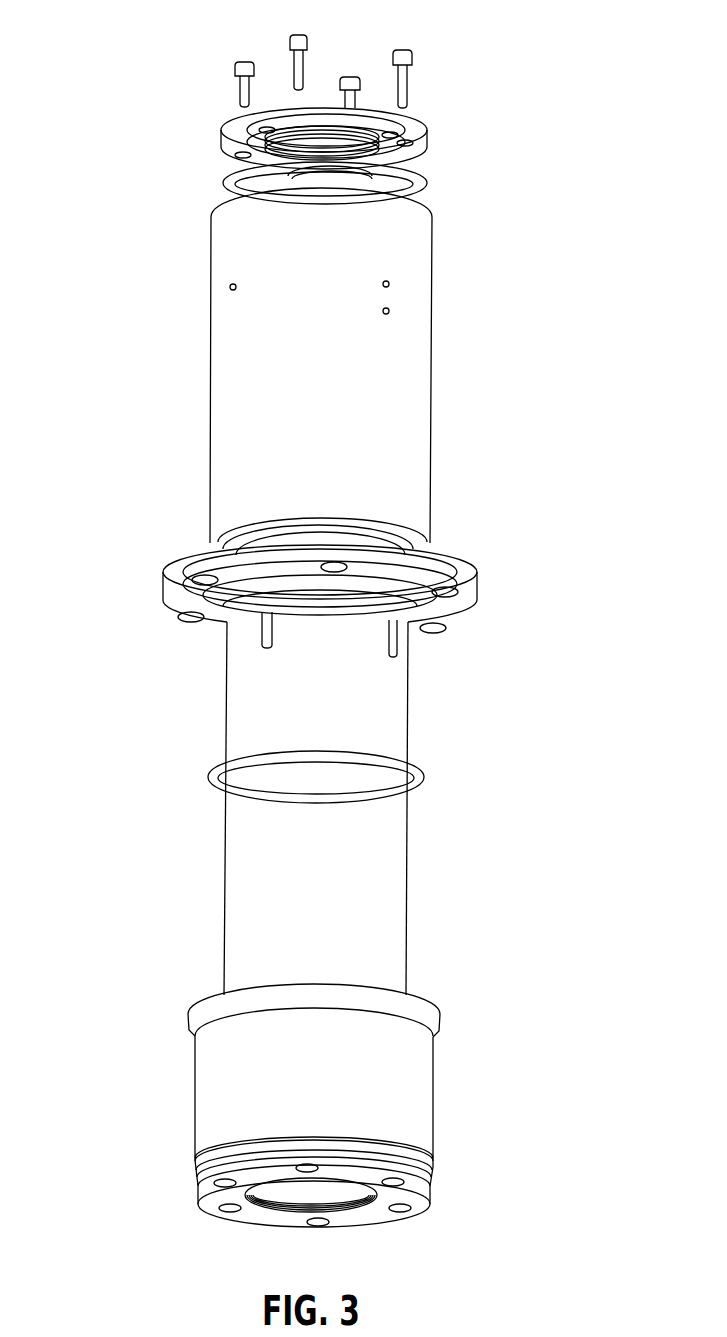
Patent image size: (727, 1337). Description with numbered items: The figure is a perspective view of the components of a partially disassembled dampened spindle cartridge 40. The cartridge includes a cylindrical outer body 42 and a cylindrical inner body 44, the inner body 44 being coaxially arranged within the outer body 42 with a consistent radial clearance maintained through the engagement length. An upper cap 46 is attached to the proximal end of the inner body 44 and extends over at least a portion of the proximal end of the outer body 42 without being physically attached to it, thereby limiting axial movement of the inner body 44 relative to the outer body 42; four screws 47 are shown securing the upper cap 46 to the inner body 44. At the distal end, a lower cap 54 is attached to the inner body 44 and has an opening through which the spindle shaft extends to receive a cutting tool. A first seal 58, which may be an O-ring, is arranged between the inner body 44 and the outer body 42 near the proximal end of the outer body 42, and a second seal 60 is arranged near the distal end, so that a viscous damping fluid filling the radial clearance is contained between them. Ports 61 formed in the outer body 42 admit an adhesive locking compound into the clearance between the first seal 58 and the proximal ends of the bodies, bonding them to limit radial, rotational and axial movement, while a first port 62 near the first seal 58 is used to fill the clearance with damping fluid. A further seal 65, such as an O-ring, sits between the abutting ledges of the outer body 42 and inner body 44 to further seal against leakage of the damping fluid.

The dampened spindle cartridge 40 is at (500, 21).
The outer body 42 is at (316, 371).
The inner body 44 is at (228, 1098).
The upper cap 46 is at (235, 143).
The screws 47 is at (292, 48).
The lower cap 54 is at (405, 1195).
The first seal 58 is at (407, 173).
The second seal 60 is at (230, 613).
The ports 61 is at (230, 286).
The first port 62 is at (390, 311).
The seal 65 is at (422, 785).